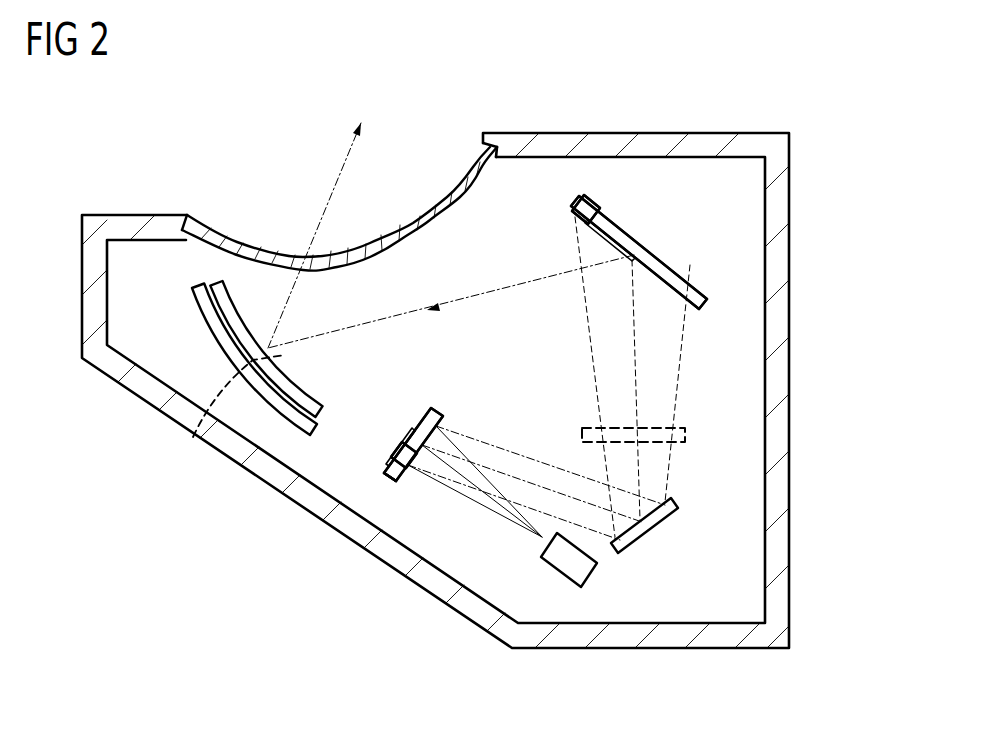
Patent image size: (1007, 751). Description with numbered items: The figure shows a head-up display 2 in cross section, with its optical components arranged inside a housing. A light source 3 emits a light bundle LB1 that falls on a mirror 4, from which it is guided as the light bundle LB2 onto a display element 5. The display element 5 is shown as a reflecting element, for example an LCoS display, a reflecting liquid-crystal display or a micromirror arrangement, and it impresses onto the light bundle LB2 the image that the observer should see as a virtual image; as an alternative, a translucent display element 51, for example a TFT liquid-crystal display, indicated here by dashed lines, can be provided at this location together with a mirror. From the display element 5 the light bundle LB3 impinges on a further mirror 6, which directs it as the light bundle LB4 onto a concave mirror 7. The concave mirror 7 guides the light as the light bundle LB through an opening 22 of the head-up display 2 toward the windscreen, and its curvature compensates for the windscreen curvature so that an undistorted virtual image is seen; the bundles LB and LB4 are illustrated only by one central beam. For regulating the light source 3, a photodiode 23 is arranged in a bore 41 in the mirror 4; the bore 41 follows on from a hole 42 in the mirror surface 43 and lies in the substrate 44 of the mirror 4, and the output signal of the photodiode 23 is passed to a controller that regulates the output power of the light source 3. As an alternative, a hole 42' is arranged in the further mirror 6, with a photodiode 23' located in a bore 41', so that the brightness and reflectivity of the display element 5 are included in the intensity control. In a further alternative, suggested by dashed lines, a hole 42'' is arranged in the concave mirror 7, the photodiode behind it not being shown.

The head-up display 2 is at (768, 98).
The opening 22 is at (268, 252).
The concave mirror 7 is at (215, 318).
The hole 42'' is at (198, 420).
The mirror 4 is at (427, 427).
The bore 41 is at (352, 495).
The hole 42 is at (375, 535).
The photodiode 23 is at (304, 481).
The substrate 44 is at (393, 477).
The mirror surface 43 is at (410, 480).
The further mirror 6 is at (673, 277).
The bore 41' is at (643, 181).
The hole 42' is at (570, 139).
The photodiode 23' is at (618, 157).
The display element 5 is at (650, 518).
The translucent display element 51 is at (685, 435).
The light source 3 is at (565, 558).
The light bundle LB1 is at (500, 519).
The light bundle LB2 is at (558, 470).
The light bundle LB3 is at (690, 352).
The light bundle LB4 is at (486, 297).
The light bundle LB is at (353, 143).